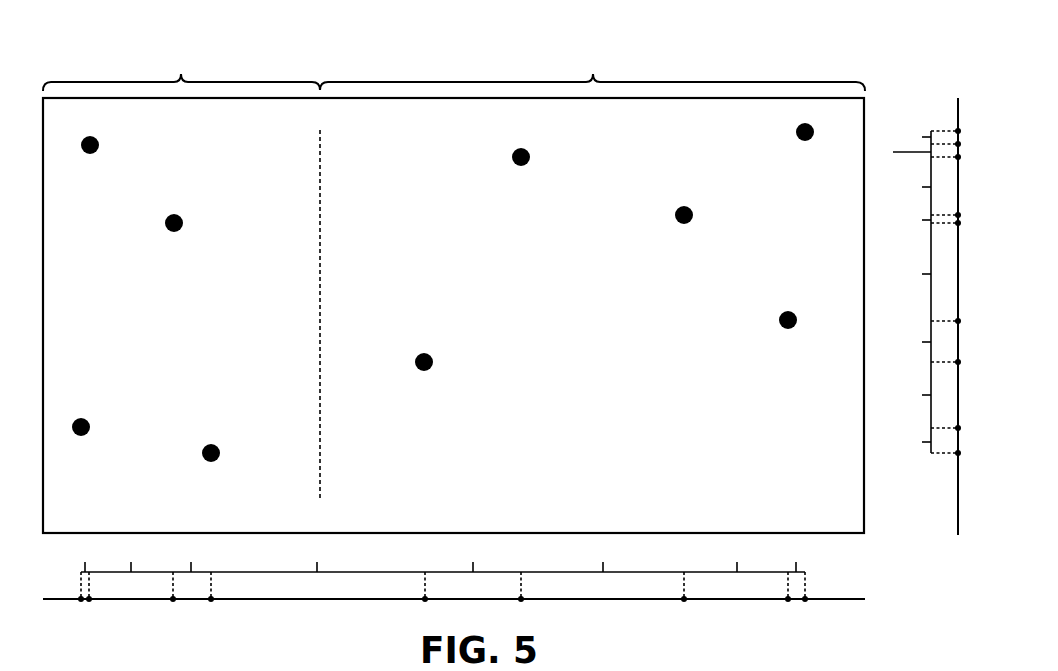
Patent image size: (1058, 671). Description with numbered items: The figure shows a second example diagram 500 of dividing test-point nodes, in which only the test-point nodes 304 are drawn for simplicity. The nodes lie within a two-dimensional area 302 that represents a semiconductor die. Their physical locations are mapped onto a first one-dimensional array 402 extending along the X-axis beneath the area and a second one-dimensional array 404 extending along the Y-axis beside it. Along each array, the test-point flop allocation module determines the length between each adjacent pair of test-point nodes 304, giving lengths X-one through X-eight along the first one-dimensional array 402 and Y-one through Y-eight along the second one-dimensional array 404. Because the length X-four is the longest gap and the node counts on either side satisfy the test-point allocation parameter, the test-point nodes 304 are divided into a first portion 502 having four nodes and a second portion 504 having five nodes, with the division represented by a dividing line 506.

The diagram 500 is at (110, 40).
The two-dimensional area 302 is at (847, 534).
The test-point nodes 304 is at (95, 139).
The first one-dimensional array 402 is at (835, 600).
The second one-dimensional array 404 is at (958, 112).
The first portion 502 is at (181, 69).
The second portion 504 is at (592, 70).
The dividing line 506 is at (320, 207).